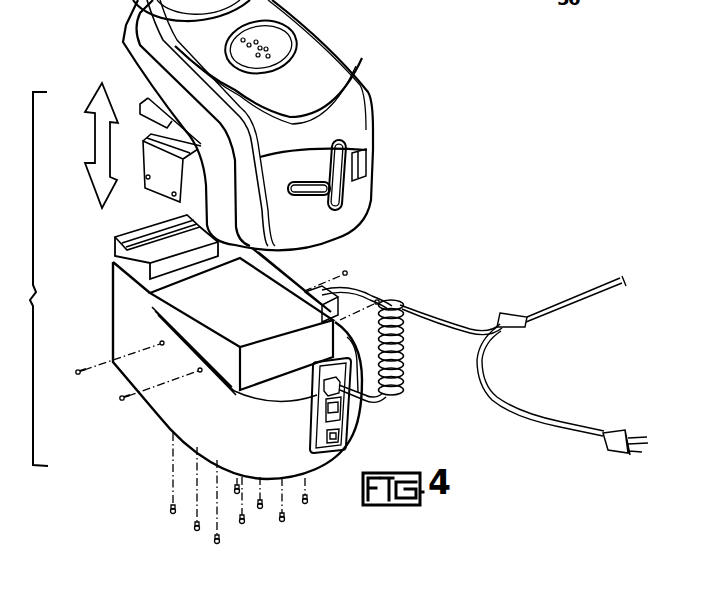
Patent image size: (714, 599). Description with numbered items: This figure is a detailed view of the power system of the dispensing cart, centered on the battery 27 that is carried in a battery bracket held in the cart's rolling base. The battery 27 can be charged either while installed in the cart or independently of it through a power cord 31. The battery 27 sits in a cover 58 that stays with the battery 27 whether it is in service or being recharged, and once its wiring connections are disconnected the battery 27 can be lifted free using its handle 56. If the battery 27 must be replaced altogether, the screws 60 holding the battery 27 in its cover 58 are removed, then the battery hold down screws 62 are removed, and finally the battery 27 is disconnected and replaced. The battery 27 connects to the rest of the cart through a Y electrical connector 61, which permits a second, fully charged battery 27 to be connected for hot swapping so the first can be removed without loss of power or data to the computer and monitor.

The battery 27 is at (260, 303).
The power cord 31 is at (397, 350).
The handle 56 is at (127, 240).
The cover 58 is at (356, 197).
The screws 60 is at (160, 515).
The Y electrical connector 61 is at (520, 313).
The battery hold down screws 62 is at (55, 369).